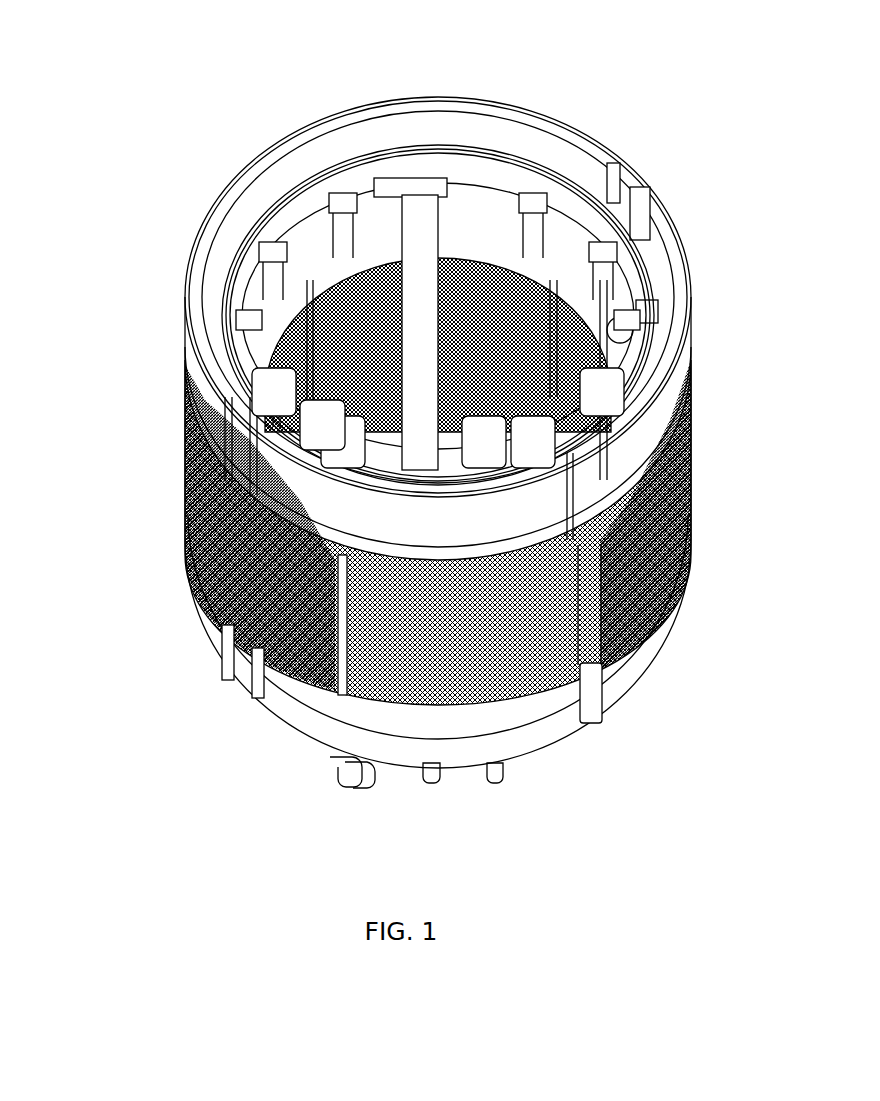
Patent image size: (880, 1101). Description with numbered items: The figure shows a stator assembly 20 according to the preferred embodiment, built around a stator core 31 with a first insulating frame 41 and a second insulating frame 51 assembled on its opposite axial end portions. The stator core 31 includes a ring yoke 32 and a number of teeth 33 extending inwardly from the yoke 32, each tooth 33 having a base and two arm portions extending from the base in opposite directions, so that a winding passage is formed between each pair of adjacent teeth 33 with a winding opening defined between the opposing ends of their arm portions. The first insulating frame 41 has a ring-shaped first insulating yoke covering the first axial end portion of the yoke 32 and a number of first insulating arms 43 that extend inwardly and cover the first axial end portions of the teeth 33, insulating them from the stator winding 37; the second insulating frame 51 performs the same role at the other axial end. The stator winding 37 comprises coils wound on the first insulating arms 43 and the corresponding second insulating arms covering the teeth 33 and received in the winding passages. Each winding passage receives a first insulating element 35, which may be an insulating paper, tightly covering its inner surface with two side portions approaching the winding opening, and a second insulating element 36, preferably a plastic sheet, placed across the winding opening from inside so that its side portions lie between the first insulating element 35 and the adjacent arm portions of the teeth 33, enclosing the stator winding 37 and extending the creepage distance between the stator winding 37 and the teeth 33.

The stator assembly 20 is at (266, 38).
The stator core 31 is at (263, 590).
The ring yoke 32 is at (272, 196).
The teeth 33 is at (530, 168).
The first insulating element 35 is at (410, 205).
The second insulating element 36 is at (490, 268).
The stator winding 37 is at (497, 170).
The first insulating frame 41 is at (243, 275).
The first insulating arms 43 is at (353, 237).
The second insulating frame 51 is at (307, 710).